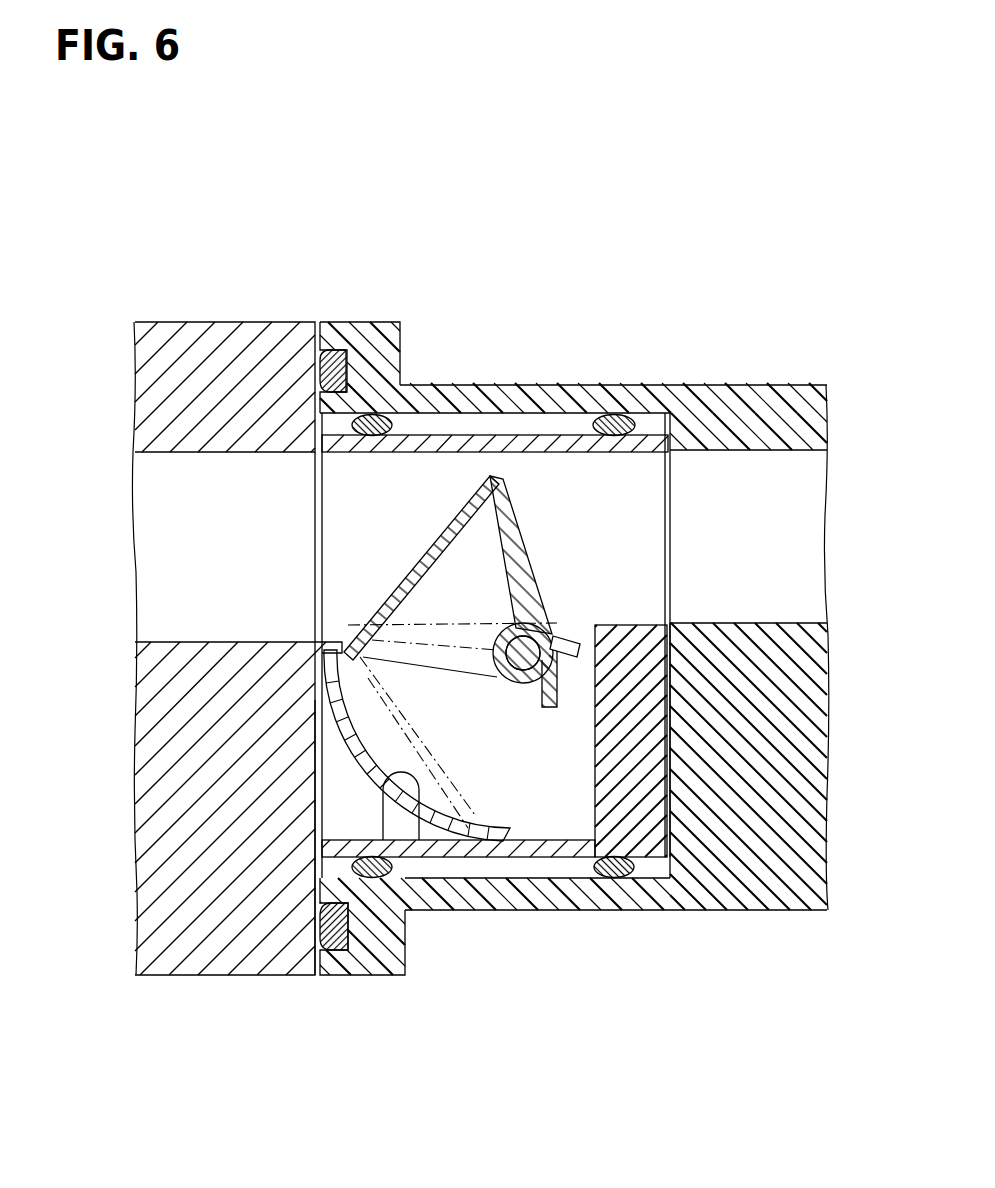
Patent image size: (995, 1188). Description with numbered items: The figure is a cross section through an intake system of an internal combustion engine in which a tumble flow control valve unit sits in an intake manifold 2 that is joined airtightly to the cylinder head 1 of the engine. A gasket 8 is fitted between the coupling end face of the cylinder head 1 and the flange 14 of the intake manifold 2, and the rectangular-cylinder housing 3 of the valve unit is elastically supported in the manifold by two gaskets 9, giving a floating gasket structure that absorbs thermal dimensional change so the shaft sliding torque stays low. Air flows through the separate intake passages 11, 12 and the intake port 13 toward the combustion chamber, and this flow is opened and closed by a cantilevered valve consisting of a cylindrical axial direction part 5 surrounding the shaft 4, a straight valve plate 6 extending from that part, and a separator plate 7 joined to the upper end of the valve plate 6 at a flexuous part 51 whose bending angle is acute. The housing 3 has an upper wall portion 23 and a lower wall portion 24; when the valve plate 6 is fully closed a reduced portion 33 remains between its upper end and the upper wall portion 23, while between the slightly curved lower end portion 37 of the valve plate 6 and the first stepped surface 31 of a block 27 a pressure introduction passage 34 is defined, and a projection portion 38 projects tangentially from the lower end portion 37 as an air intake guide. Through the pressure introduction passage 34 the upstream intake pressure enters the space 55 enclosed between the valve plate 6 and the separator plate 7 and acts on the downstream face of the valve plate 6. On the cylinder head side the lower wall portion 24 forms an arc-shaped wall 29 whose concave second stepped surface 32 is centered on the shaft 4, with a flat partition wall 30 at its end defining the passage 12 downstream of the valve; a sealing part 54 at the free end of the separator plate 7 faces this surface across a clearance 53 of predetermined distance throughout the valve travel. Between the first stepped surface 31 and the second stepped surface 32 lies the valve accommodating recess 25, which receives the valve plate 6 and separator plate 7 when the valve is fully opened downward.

The cylinder head 1 is at (183, 343).
The intake manifold 2 is at (788, 397).
The housing 3 is at (468, 435).
The housing upper wall portion 23 is at (468, 435).
The shaft 4 is at (510, 684).
The axial direction part 5 is at (527, 671).
The valve plate 6 is at (523, 558).
The separator plate 7 is at (446, 548).
The gasket 8 is at (330, 350).
The gasket 9 is at (377, 415).
The separate intake passage 11 is at (720, 558).
The separate intake passage 12 is at (348, 558).
The intake port 13 is at (200, 558).
The flange 14 is at (358, 330).
The housing lower wall portion 24 is at (398, 880).
The valve accommodating recess 25 is at (558, 813).
The block 27 is at (645, 767).
The arc-shaped wall 29 is at (304, 700).
The partition wall 30 is at (333, 651).
The first stepped surface 31 is at (595, 760).
The second stepped surface 32 is at (422, 835).
The reduced portion 33 is at (495, 460).
The pressure introduction passage 34 is at (577, 682).
The lower end portion 37 is at (553, 640).
The projection portion 38 is at (543, 709).
The flexuous part 51 is at (497, 488).
The clearance 53 is at (345, 645).
The sealing part 54 is at (347, 637).
The space 55 is at (440, 603).